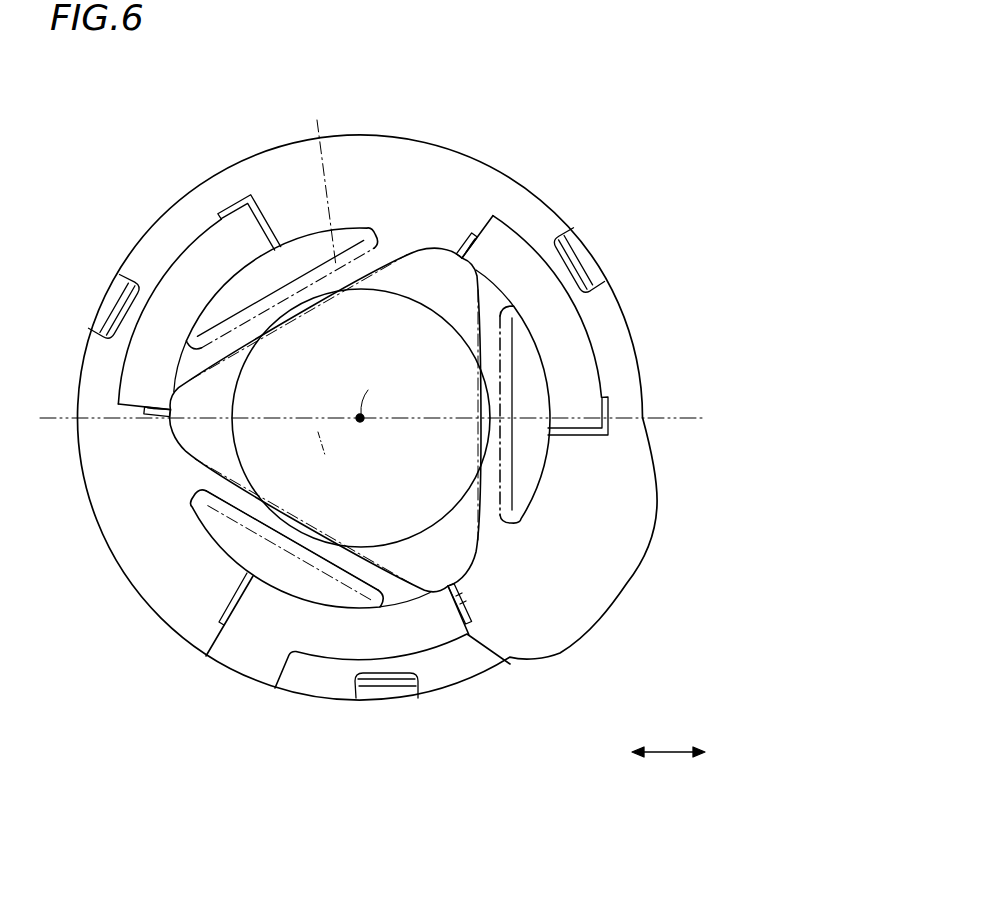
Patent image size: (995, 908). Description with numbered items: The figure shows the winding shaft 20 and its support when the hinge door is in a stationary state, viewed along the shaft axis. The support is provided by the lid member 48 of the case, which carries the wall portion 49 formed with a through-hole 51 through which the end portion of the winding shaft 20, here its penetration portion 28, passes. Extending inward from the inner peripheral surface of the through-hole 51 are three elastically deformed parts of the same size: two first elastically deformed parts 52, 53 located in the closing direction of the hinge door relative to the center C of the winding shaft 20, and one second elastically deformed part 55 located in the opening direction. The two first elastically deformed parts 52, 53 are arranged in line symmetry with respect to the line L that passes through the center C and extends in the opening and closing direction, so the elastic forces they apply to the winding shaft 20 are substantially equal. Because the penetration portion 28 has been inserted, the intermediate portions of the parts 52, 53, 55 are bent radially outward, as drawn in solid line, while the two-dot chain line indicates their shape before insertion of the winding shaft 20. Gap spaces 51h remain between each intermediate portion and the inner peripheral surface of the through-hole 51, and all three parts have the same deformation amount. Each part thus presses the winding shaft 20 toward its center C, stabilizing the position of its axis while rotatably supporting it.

The lid member 48 is at (374, 138).
The wall portion 49 is at (466, 172).
The through-hole 51 is at (183, 437).
The gap space 51h is at (228, 311).
The first elastically deformed part 52 is at (330, 270).
The first elastically deformed part 53 is at (233, 517).
The second elastically deformed part 55 is at (505, 474).
The winding shaft 20 is at (433, 497).
The penetration portion 28 is at (427, 510).